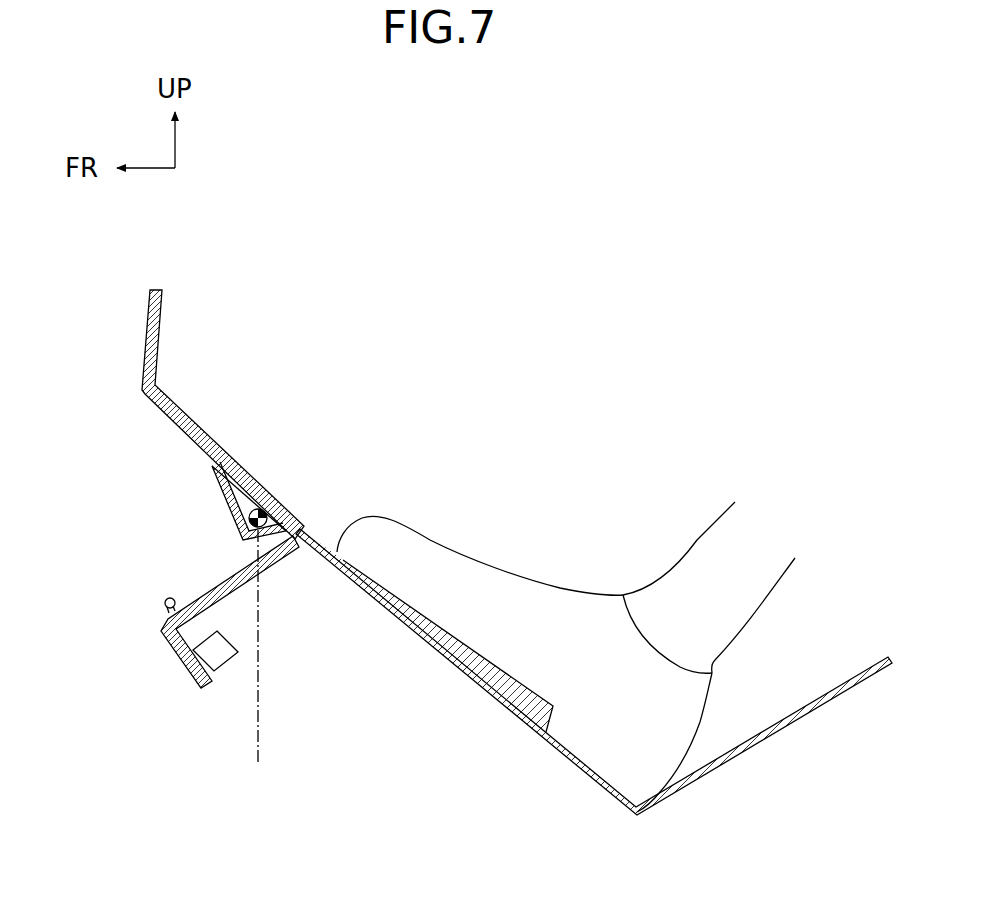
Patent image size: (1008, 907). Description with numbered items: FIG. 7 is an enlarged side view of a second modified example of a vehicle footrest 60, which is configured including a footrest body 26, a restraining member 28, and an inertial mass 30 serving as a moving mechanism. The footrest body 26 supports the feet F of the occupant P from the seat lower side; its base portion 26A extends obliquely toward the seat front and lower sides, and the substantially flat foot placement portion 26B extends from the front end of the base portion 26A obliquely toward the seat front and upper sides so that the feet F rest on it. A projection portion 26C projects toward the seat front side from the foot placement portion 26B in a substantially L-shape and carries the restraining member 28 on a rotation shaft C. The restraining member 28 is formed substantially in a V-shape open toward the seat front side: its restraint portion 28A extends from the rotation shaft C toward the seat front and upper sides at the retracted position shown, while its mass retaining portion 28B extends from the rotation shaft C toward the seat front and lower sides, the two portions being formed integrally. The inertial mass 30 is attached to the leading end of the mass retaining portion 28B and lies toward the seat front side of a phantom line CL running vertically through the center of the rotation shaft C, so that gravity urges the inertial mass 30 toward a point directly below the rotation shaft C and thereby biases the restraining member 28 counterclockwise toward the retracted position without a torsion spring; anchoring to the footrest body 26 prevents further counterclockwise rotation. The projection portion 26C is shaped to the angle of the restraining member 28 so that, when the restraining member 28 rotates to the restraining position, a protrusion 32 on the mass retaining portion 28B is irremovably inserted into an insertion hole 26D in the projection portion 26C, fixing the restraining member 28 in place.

The vehicle footrest 60 is at (391, 309).
The restraining member 28 is at (186, 404).
The restraint portion 28A is at (147, 335).
The mass retaining portion 28B is at (192, 672).
The footrest body 26 is at (575, 775).
The base portion 26A is at (829, 703).
The foot placement portion 26B is at (483, 688).
The projection portion 26C is at (242, 508).
The insertion hole 26D is at (216, 486).
The inertial mass 30 is at (222, 665).
The protrusion 32 is at (164, 607).
The rotation shaft C is at (268, 516).
The phantom line CL is at (262, 690).
The feet F is at (578, 592).
The toe T is at (372, 518).
The occupant P is at (702, 529).